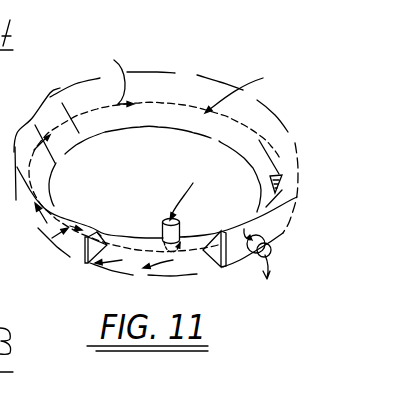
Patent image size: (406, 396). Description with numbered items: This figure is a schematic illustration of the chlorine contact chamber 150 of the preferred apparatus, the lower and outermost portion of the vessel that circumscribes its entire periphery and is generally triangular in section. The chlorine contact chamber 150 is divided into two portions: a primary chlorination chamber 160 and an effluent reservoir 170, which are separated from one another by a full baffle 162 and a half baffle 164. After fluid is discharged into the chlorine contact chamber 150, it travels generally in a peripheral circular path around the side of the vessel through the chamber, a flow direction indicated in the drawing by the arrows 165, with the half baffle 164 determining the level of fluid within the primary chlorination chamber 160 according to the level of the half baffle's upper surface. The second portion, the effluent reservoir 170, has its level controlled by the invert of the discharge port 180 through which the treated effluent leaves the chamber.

The chlorine contact chamber 150 is at (173, 73).
The primary chlorination chamber 160 is at (86, 263).
The full baffle 162 is at (176, 243).
The half baffle 164 is at (103, 241).
The light path 165 is at (164, 100).
The effluent reservoir 170 is at (58, 232).
The discharge port 180 is at (275, 257).